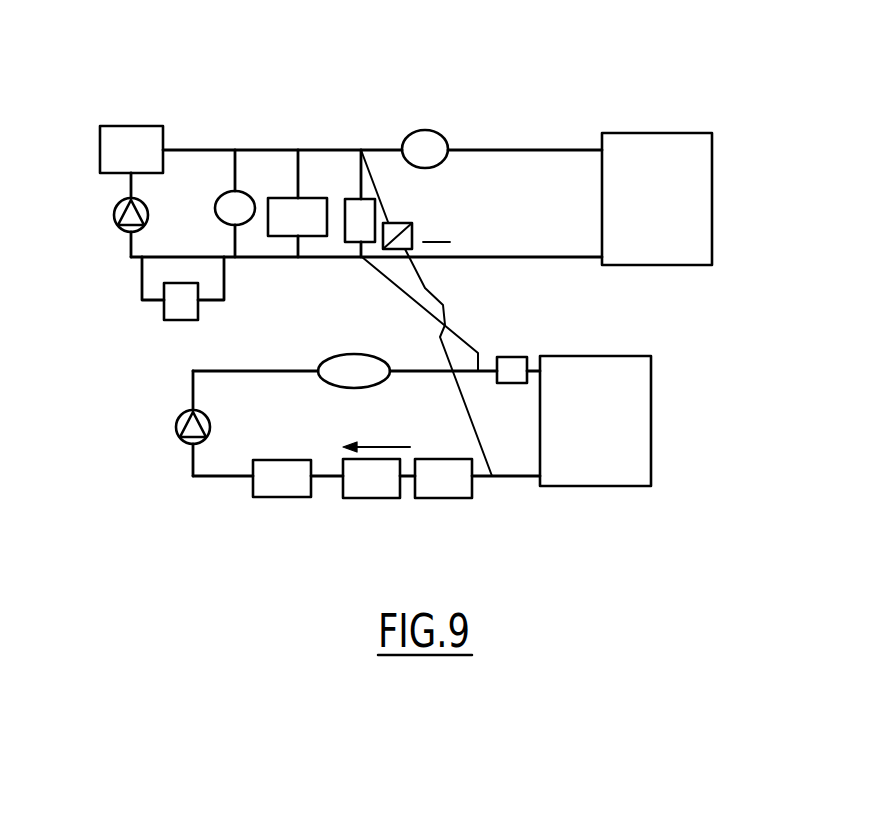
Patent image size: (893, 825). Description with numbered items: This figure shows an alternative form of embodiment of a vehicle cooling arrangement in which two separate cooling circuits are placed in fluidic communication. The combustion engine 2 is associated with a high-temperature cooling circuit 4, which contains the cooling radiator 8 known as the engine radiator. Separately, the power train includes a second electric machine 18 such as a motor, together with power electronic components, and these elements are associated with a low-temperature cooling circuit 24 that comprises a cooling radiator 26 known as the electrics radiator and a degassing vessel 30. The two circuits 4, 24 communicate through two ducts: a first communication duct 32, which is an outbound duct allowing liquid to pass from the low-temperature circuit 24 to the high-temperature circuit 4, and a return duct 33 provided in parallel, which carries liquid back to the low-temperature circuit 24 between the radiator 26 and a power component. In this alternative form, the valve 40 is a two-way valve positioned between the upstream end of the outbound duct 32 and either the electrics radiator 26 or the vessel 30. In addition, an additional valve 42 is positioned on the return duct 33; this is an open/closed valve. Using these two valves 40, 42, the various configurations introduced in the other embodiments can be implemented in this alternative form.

The combustion engine 2 is at (133, 126).
The cooling circuit 4 is at (90, 253).
The cooling radiator 8 is at (712, 155).
The second electric machine 18 is at (282, 498).
The cooling circuit 24 is at (198, 533).
The cooling radiator 26 is at (651, 382).
The degassing vessel 30 is at (358, 353).
The first communication duct 32 is at (468, 343).
The return duct 33 is at (423, 268).
The valve 40 is at (515, 386).
The additional valve V1 42 is at (408, 222).